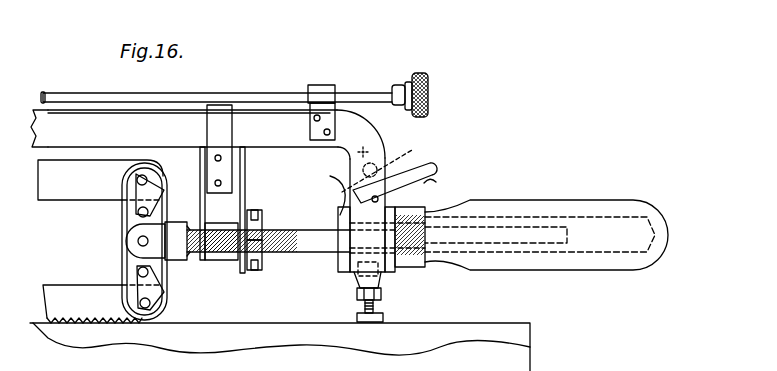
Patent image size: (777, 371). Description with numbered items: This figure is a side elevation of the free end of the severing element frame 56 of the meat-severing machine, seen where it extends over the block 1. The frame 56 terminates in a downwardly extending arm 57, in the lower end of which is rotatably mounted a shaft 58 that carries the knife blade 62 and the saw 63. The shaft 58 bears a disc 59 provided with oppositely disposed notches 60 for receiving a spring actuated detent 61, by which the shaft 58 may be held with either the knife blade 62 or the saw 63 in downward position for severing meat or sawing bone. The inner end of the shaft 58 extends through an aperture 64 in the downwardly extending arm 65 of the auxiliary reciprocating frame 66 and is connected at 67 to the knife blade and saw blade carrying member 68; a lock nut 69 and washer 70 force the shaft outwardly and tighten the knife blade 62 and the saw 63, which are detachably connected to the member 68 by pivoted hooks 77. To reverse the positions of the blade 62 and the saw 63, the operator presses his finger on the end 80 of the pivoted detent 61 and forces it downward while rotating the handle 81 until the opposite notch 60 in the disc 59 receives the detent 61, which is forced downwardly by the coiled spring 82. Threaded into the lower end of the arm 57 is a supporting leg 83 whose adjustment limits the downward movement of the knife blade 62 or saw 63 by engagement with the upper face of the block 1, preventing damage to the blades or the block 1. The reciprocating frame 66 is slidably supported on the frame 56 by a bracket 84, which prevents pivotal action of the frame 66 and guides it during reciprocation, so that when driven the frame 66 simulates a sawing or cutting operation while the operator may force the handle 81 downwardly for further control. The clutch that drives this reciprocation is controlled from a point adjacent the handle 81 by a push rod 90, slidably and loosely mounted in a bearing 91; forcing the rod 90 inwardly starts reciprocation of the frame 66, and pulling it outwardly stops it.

The block 1 is at (518, 326).
The severing element frame 56 is at (208, 134).
The downwardly extending arm 57 is at (434, 170).
The shaft 58 is at (303, 253).
The disc 59 is at (345, 238).
The notches 60 is at (334, 207).
The spring actuated detent 61 is at (382, 147).
The knife blade 62 is at (72, 190).
The saw 63 is at (72, 294).
The aperture 64 is at (220, 261).
The downwardly extending arm 65 is at (244, 196).
The auxiliary reciprocating frame 66 is at (46, 112).
The connection 67 is at (150, 246).
The knife blade and saw blade carrying member 68 is at (126, 240).
The lock nut 69 is at (253, 271).
The washer 70 is at (255, 212).
The pivoted hooks 77 is at (158, 185).
The end of the pivoted detent 80 is at (438, 182).
The handle 81 is at (601, 212).
The coiled spring 82 is at (398, 162).
The supporting leg 83 is at (382, 308).
The bracket 84 is at (221, 112).
The push rod 90 is at (371, 93).
The bearing 91 is at (318, 86).